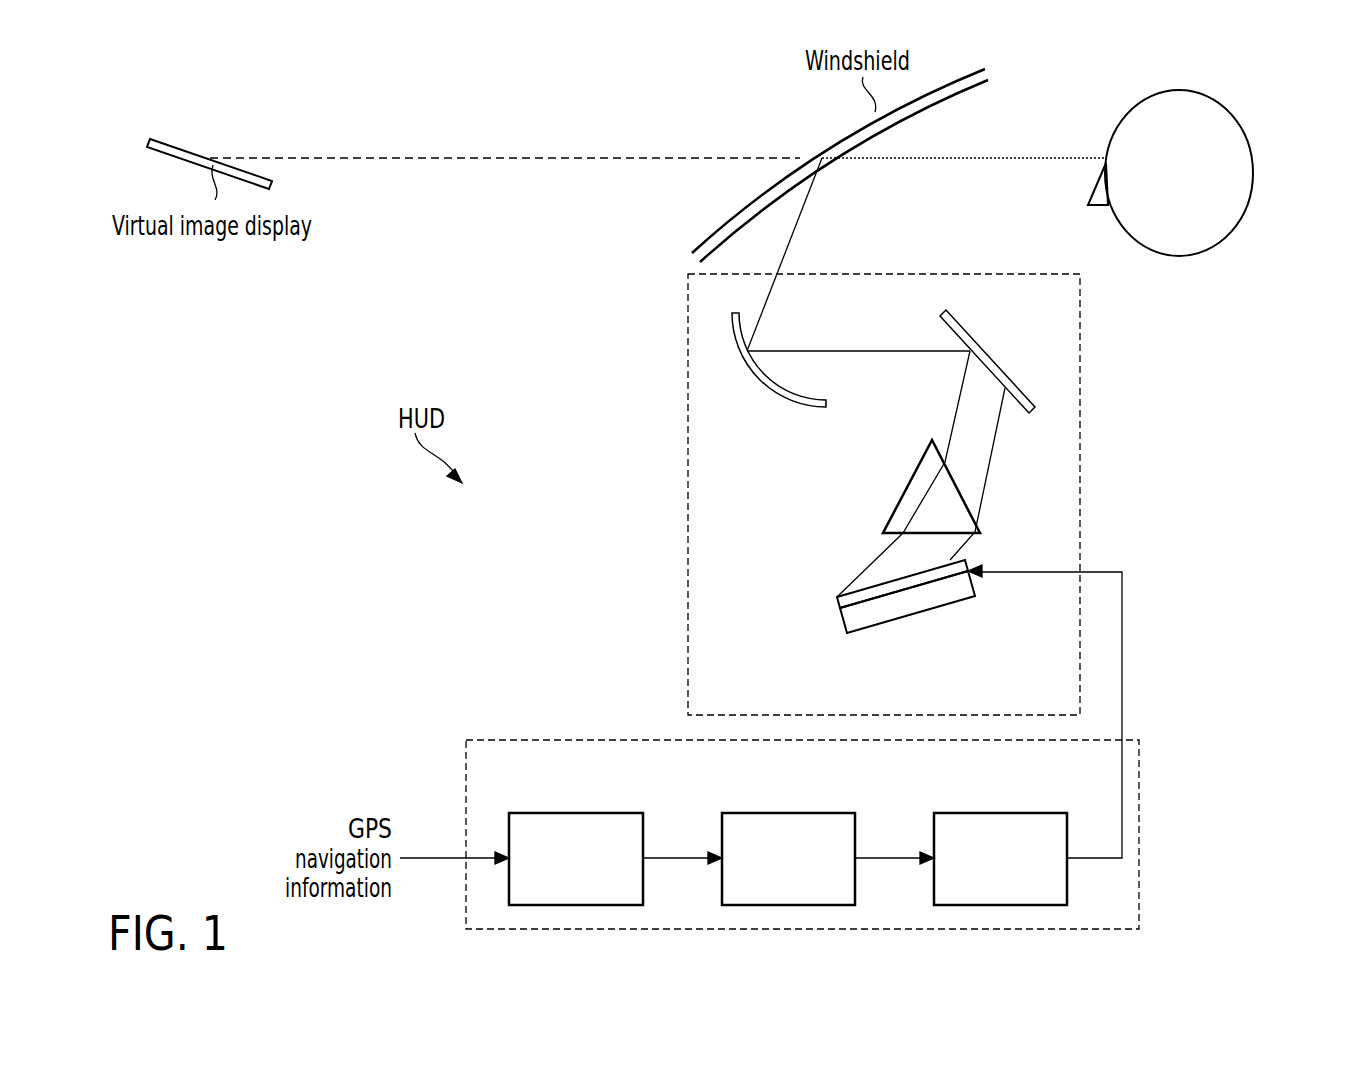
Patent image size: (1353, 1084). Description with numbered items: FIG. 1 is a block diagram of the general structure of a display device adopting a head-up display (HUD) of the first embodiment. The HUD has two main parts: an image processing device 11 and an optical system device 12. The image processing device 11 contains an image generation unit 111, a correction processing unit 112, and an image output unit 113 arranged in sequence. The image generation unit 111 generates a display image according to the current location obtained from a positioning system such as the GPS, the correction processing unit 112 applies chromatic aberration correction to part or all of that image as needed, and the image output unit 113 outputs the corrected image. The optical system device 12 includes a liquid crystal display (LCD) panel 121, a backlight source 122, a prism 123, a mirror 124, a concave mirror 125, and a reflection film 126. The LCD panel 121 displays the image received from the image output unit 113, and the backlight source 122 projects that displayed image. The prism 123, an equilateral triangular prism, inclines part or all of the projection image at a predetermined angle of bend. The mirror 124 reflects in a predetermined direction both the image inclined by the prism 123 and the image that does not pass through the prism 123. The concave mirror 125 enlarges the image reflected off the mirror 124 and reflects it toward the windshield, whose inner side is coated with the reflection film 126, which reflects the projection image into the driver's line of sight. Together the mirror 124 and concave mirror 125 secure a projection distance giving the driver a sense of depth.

The image processing device 11 is at (500, 738).
The optical system device 12 is at (1082, 316).
The image generation unit 111 is at (618, 812).
The correction processing unit 112 is at (832, 812).
The image output unit 113 is at (1045, 812).
The liquid crystal display (LCD) panel 121 is at (837, 603).
The backlight source 122 is at (917, 613).
The prism 123 is at (897, 505).
The mirror 124 is at (993, 348).
The concave mirror 125 is at (752, 385).
The reflection film 126 is at (902, 117).